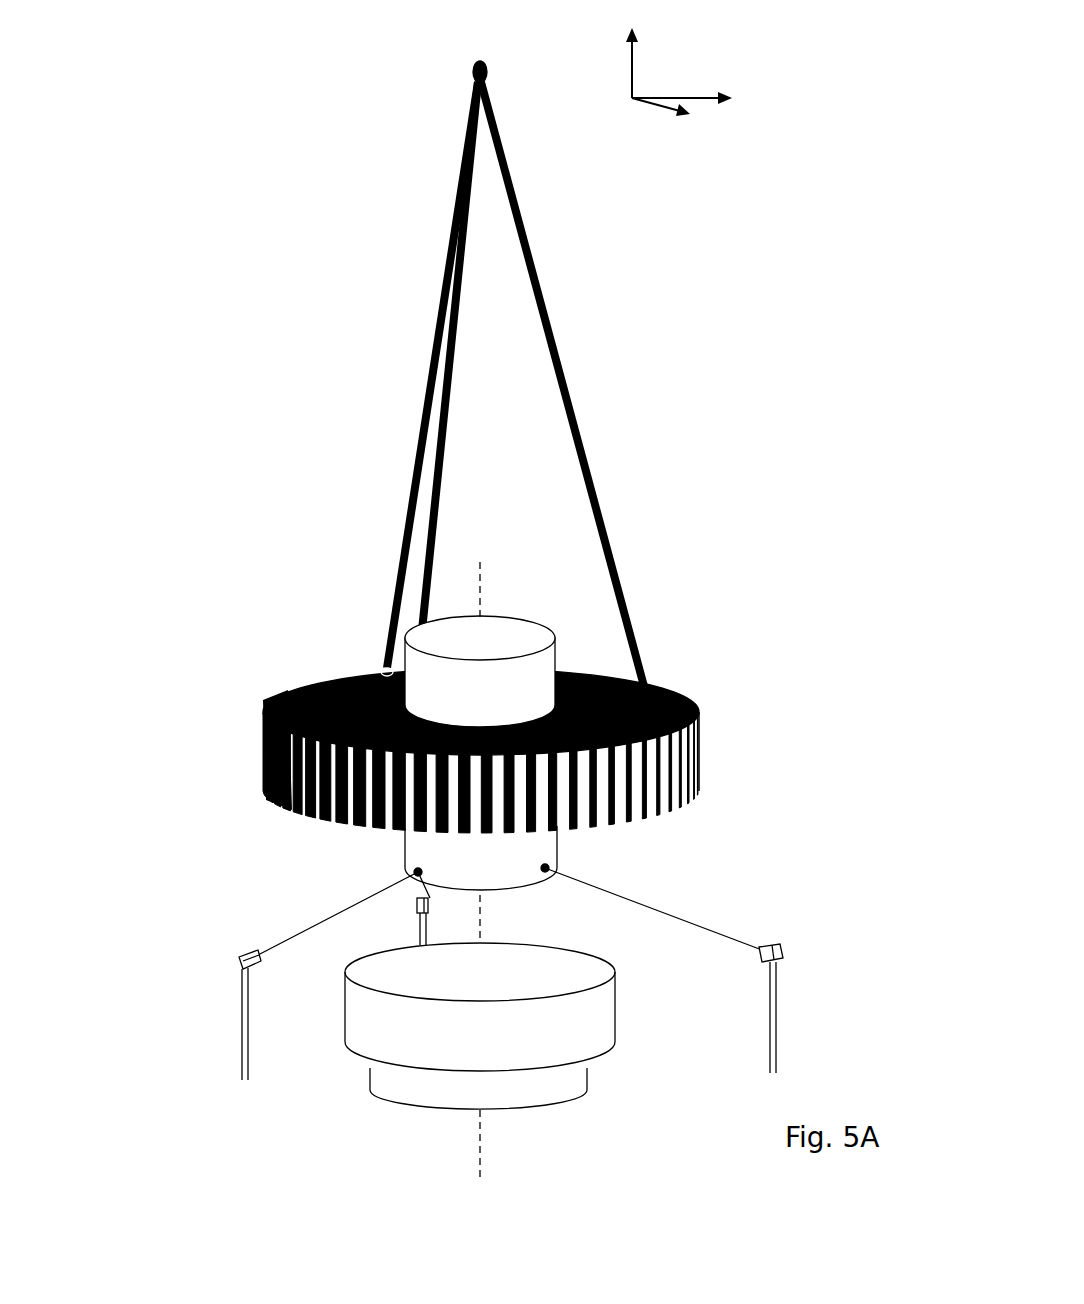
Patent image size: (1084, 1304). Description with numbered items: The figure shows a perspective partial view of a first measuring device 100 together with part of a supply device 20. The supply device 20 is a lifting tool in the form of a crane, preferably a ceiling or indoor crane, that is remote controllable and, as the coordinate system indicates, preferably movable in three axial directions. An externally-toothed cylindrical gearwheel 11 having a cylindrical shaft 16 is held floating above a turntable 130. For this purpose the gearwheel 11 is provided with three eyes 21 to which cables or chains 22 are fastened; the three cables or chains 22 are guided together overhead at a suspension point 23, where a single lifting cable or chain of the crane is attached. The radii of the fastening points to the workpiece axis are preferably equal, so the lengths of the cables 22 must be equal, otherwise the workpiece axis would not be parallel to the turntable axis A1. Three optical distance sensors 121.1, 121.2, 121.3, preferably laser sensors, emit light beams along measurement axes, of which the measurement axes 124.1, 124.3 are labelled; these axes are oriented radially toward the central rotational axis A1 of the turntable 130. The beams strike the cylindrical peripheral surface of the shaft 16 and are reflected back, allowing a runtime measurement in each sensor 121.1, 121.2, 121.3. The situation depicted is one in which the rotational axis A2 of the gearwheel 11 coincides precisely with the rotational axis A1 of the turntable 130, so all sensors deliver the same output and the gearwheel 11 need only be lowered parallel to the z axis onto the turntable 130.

The measuring device 100 is at (158, 678).
The supply device 20 is at (832, 30).
The suspension point 23 is at (489, 74).
The cables or chains 22 is at (442, 478).
The eyes 21 is at (265, 702).
The cylindrical gearwheel 11 is at (690, 748).
The cylindrical shaft 16 is at (503, 632).
The rotational axis A1 is at (481, 918).
The rotational axis A2 is at (481, 576).
The measurement axis 124.1 is at (317, 923).
The measurement axis 124.3 is at (683, 917).
The distance sensor 121.1 is at (248, 952).
The distance sensor 121.2 is at (415, 903).
The distance sensor 121.3 is at (772, 945).
The turntable 130 is at (585, 1016).